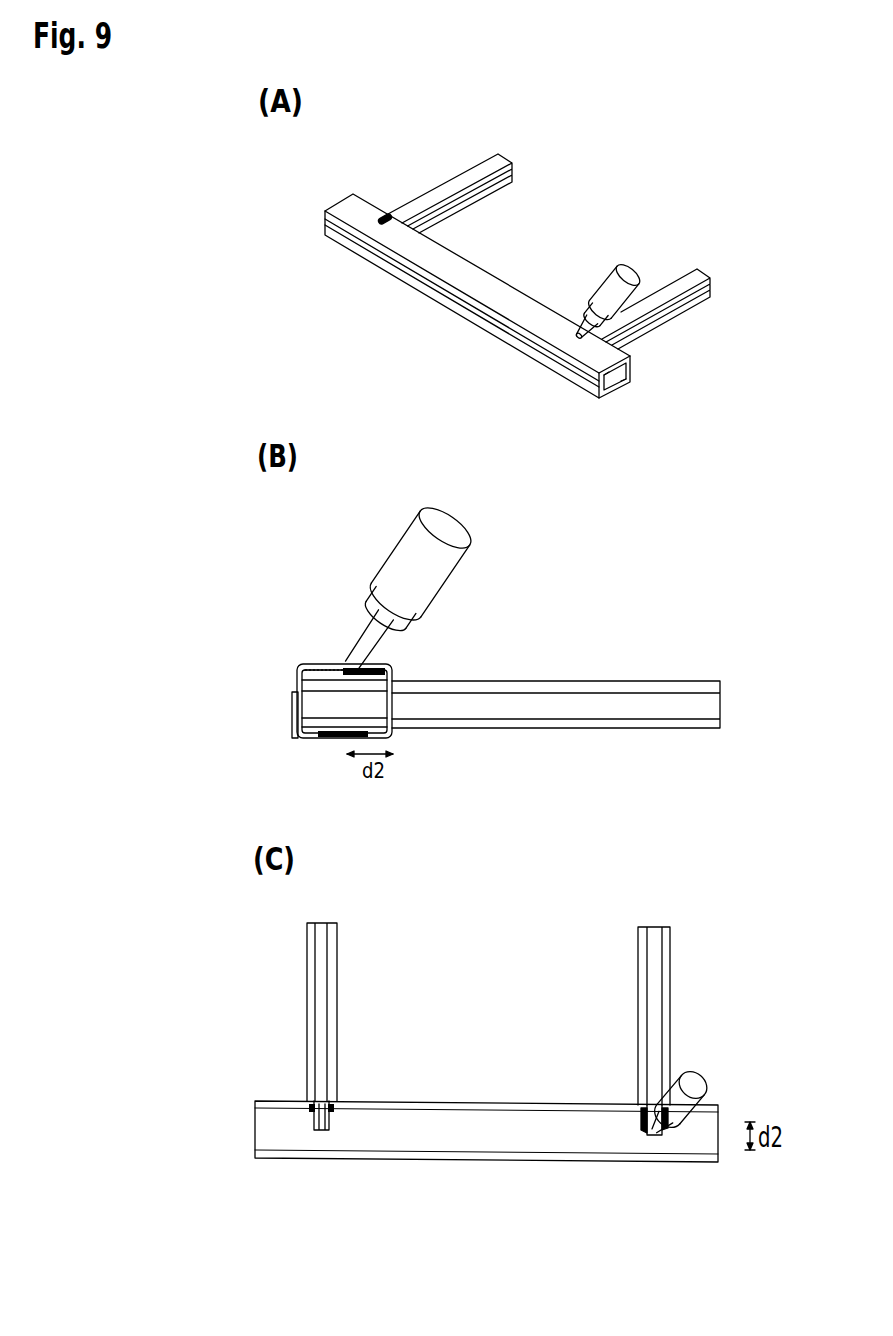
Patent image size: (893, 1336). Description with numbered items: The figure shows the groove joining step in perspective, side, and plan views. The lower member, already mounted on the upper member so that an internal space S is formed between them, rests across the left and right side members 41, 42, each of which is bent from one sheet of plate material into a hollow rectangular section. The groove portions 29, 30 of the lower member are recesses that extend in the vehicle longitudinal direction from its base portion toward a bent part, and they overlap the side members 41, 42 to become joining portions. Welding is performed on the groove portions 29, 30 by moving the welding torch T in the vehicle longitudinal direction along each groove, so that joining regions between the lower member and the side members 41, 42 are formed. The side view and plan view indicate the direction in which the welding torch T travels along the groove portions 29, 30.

In FIG. 9B, the side member 41 is at (556, 673).
In FIG. 9B, the side member 42 is at (530, 680).
In FIG. 9B, the welding torch T is at (463, 556).
In FIG. 9B, the internal space S is at (314, 663).
In FIG. 9C, the groove portion 29 is at (333, 1097).
In FIG. 9C, the groove portion 30 is at (640, 1100).